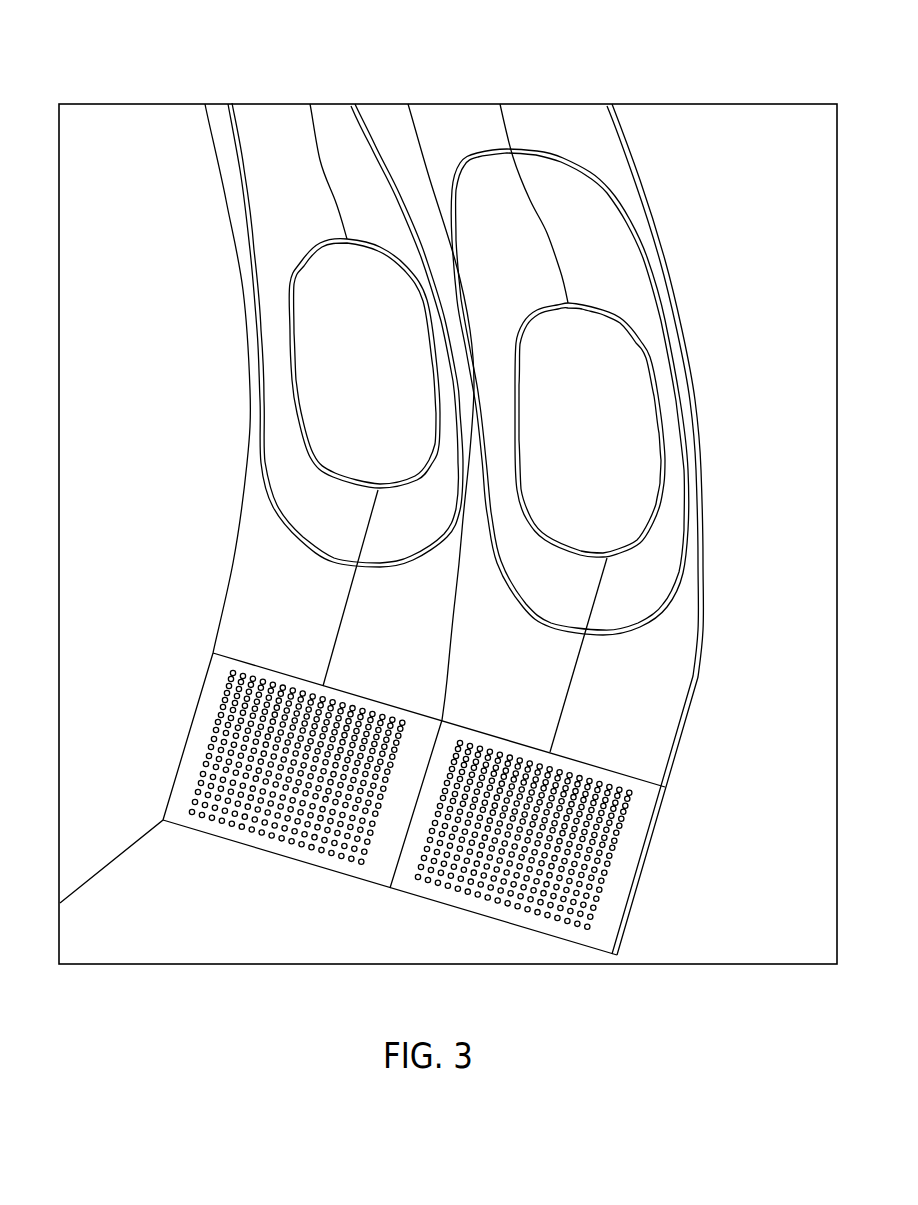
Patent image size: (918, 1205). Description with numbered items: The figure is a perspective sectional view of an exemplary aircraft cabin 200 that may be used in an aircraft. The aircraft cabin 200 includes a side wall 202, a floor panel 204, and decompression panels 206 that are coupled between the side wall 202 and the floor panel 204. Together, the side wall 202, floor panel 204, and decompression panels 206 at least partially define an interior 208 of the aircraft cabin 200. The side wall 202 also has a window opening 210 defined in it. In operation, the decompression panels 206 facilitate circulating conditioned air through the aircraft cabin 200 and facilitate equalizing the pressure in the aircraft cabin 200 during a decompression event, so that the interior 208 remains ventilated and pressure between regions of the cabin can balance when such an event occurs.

The aircraft cabin 200 is at (372, 55).
The side wall 202 is at (610, 158).
The floor panel 204 is at (241, 928).
The decompression panels 206 is at (635, 831).
The interior 208 is at (172, 461).
The window opening 210 is at (613, 446).